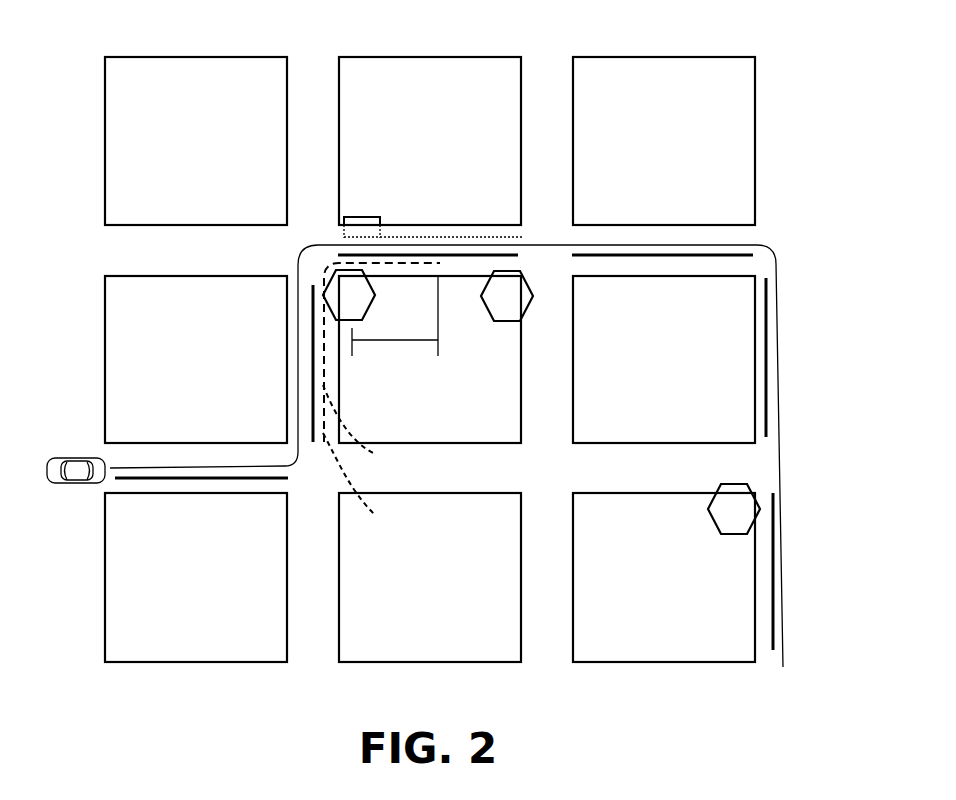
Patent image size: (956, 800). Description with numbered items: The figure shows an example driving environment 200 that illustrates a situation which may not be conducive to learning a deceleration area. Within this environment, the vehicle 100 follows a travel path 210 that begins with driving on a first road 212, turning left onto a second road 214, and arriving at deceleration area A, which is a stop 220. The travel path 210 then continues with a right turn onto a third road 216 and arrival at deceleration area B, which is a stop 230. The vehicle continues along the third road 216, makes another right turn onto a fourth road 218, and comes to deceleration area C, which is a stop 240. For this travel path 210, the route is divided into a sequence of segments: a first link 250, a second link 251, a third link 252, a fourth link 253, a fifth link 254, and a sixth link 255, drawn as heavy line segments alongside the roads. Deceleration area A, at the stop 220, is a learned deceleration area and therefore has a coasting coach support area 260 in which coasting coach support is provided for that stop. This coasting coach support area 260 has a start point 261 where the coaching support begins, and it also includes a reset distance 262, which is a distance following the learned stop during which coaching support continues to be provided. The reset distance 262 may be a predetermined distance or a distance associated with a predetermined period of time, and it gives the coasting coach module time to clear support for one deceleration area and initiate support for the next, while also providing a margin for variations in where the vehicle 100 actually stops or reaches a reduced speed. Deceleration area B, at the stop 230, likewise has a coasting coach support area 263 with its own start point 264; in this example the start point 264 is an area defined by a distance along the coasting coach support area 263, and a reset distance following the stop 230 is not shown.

The vehicle 100 is at (80, 457).
The driving environment 200 is at (617, 26).
The travel path 210 is at (772, 248).
The first road 212 is at (93, 496).
The second road 214 is at (317, 676).
The third road 216 is at (122, 250).
The fourth road 218 is at (762, 670).
The stop 220 is at (376, 295).
The stop 230 is at (528, 312).
The stop 240 is at (712, 522).
The first link 250 is at (200, 480).
The second link 251 is at (312, 307).
The third link 252 is at (494, 254).
The fourth link 253 is at (676, 257).
The fifth link 254 is at (765, 386).
The sixth link 255 is at (772, 592).
The coasting coach support area 260 is at (368, 426).
The start point 261 is at (368, 479).
The reset distance 262 is at (388, 342).
The coasting coach support area 263 is at (444, 236).
The start point 264 is at (362, 217).